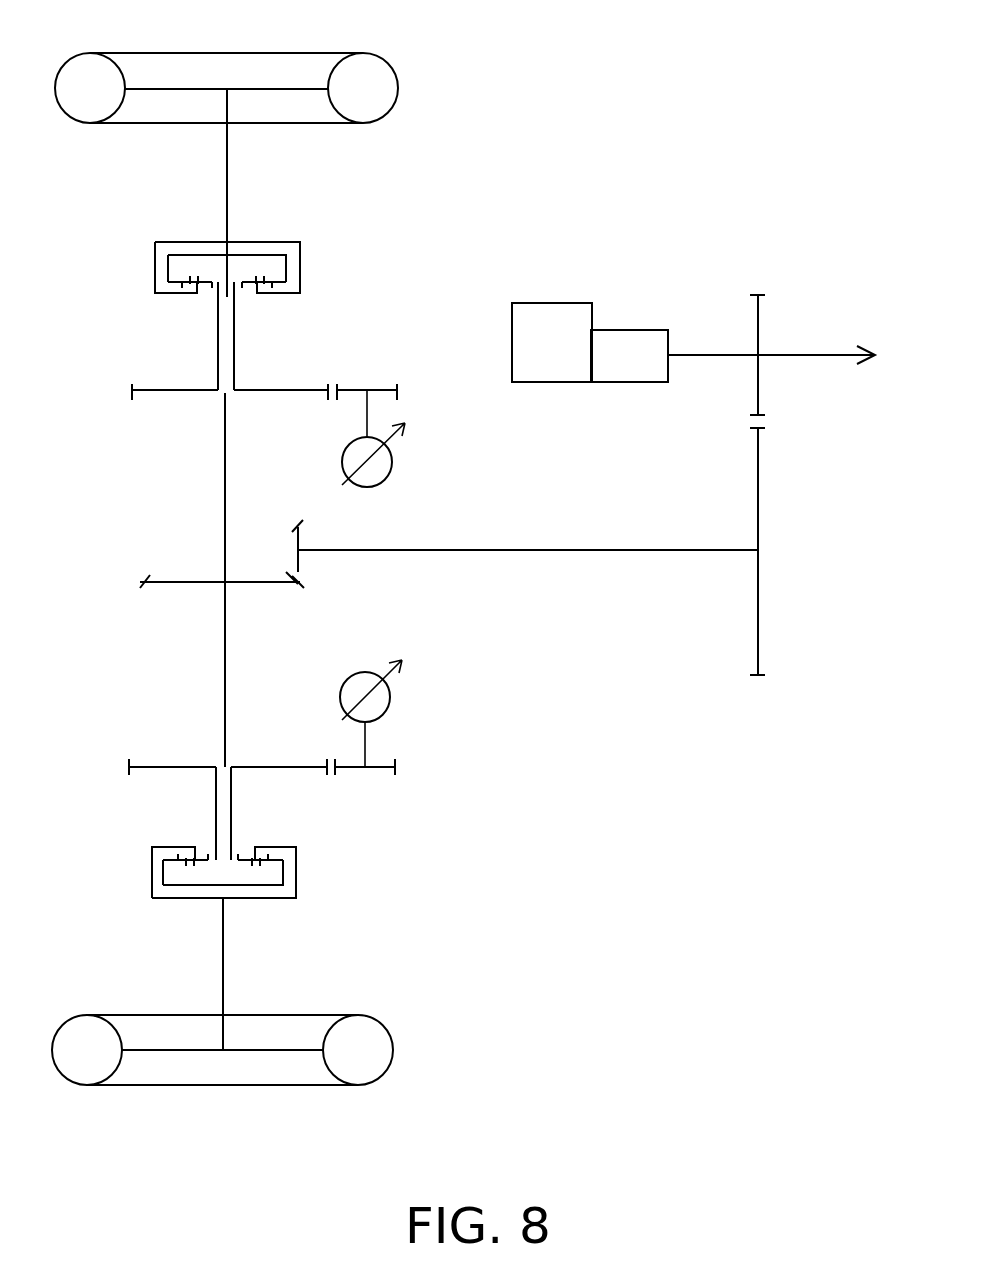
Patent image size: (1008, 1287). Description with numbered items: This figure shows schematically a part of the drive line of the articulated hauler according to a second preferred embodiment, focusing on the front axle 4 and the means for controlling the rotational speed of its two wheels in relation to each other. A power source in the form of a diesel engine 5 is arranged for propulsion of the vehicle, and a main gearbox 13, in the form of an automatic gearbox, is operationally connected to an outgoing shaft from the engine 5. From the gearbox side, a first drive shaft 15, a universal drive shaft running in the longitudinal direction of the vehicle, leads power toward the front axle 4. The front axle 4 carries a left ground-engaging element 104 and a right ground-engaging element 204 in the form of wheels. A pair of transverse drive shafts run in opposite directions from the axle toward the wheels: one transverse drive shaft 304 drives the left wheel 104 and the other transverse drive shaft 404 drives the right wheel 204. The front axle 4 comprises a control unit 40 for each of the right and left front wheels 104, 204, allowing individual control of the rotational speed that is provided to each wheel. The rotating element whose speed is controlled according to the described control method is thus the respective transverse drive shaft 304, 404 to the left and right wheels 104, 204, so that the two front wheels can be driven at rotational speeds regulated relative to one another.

The front axle 4 is at (233, 1124).
The diesel engine 5 is at (550, 258).
The main gearbox 13 is at (654, 280).
The first drive shaft 15 is at (578, 551).
The control unit 40 is at (348, 291).
The left ground-engaging element 104 is at (393, 1051).
The right ground-engaging element 204 is at (400, 82).
The transverse drive shaft 304 is at (222, 968).
The transverse drive shaft 404 is at (227, 177).